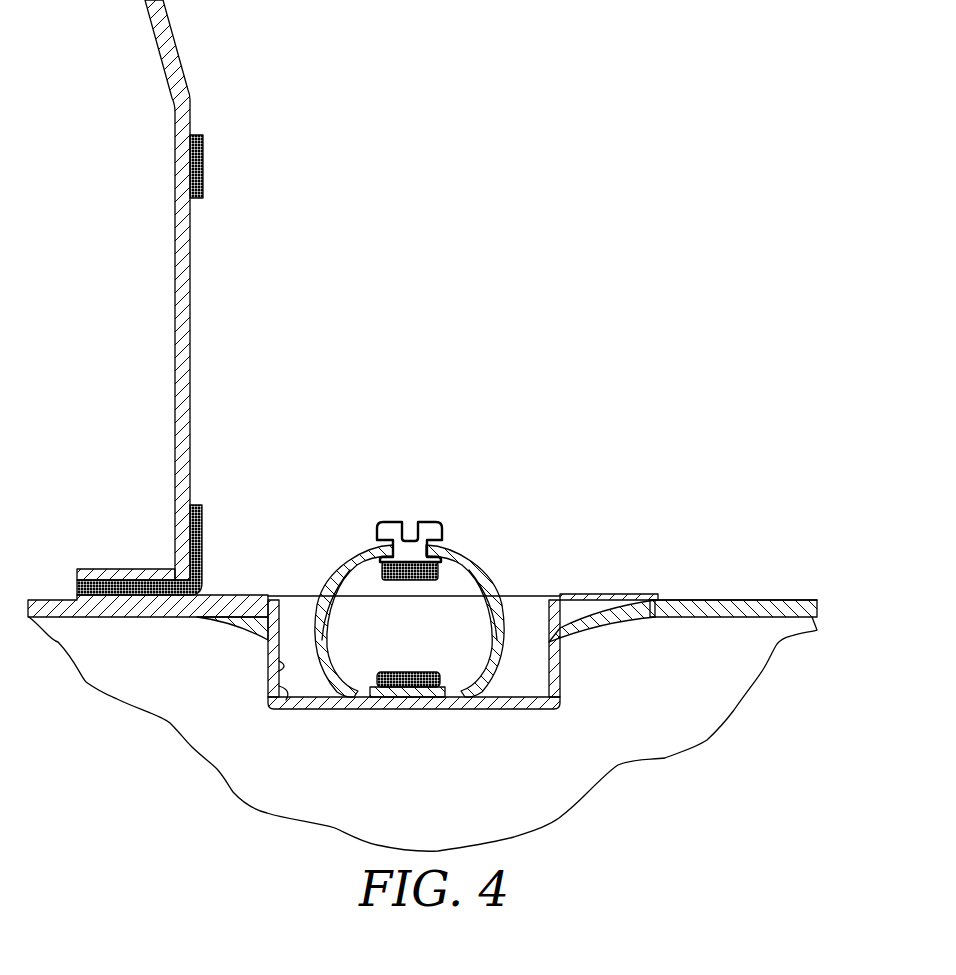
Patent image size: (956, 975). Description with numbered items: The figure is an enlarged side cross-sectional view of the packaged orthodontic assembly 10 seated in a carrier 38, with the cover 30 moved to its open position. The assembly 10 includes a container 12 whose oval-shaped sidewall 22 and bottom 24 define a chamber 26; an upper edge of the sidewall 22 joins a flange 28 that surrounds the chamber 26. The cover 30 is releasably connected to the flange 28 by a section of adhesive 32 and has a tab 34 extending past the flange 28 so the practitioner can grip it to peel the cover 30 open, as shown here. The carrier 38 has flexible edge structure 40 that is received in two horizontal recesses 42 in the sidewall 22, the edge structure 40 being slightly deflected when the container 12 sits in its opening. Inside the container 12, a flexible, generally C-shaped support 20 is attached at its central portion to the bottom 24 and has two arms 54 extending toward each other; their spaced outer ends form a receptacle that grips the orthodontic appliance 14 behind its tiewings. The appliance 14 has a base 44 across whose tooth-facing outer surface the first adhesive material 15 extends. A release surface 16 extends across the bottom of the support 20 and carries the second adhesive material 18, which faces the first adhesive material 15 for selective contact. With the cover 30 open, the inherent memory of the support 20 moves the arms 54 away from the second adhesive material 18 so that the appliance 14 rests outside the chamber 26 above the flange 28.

The packaged orthodontic assembly 10 is at (640, 452).
The container 12 is at (125, 566).
The orthodontic appliance 14 is at (436, 521).
The first orthodontic adhesive material 15 is at (424, 580).
The release surface 16 is at (396, 690).
The second orthodontic adhesive material 18 is at (420, 680).
The support 20 is at (498, 580).
The sidewall 22 is at (561, 680).
The bottom 24 is at (278, 692).
The chamber 26 is at (277, 667).
The flange 28 is at (660, 597).
The cover 30 is at (192, 348).
The adhesive 32 is at (77, 590).
The tab 34 is at (184, 78).
The carrier 38 is at (790, 600).
The edge structure 40 is at (212, 620).
The recesses 42 is at (278, 630).
The base 44 is at (388, 552).
The arms 54 is at (362, 547).